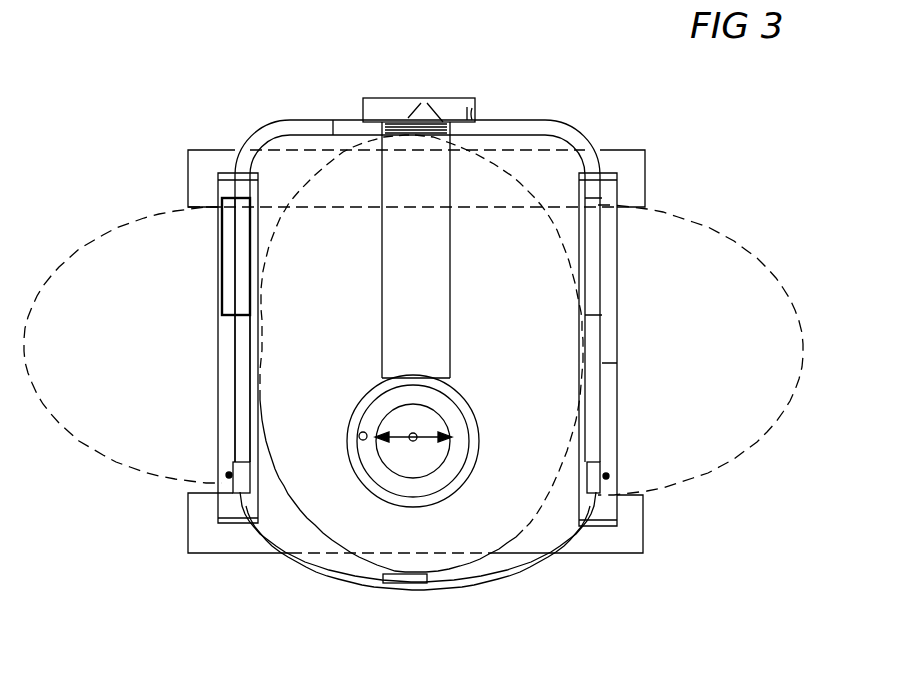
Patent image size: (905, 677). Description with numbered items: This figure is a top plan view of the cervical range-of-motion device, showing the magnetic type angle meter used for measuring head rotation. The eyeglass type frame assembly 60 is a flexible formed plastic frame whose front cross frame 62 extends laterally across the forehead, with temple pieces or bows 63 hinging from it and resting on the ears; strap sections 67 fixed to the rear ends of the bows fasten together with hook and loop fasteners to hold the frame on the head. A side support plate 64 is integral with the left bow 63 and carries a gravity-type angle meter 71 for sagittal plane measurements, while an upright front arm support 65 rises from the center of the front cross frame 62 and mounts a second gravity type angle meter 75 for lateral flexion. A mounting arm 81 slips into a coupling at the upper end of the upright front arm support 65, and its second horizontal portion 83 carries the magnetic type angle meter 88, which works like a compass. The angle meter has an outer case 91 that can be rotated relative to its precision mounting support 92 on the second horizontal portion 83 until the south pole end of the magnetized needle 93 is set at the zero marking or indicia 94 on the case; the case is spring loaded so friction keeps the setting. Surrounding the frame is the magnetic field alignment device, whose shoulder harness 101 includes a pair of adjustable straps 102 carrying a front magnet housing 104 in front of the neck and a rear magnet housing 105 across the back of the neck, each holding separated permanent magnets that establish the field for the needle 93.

The eyeglass type frame assembly 60 is at (327, 110).
The front cross frame 62 is at (528, 128).
The temple pieces or bows 63 is at (240, 407).
The side support plate 64 is at (243, 237).
The upright front arm support 65 is at (350, 130).
The strap sections 67 is at (332, 572).
The gravity-type angle meter 71 is at (230, 173).
The second gravity type angle meter 75 is at (477, 106).
The mounting arm 81 is at (386, 200).
The second horizontal portion 83 is at (450, 327).
The magnetic type angle meter 88 is at (468, 437).
The outer case 91 is at (453, 407).
The precision mounting support 92 is at (433, 503).
The needle 93 is at (402, 433).
The zero marking or indicia 94 is at (368, 440).
The shoulder harness 101 is at (227, 368).
The adjustable straps 102 is at (222, 265).
The front magnet housing 104 is at (627, 158).
The rear magnet housing 105 is at (562, 547).